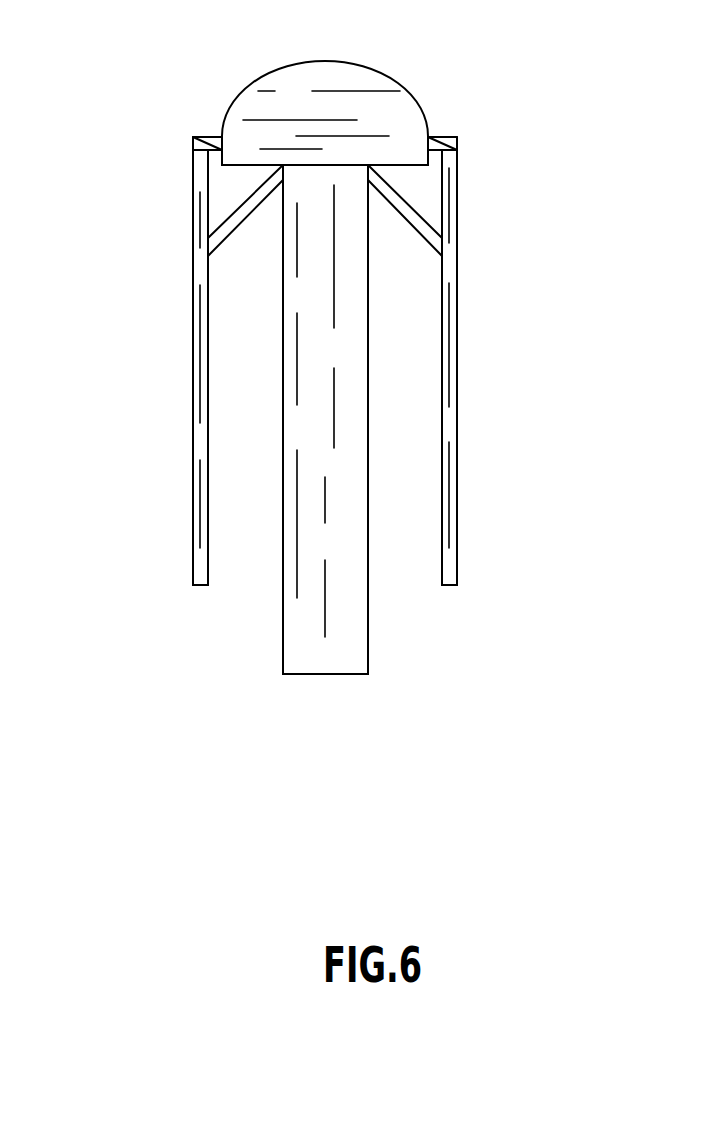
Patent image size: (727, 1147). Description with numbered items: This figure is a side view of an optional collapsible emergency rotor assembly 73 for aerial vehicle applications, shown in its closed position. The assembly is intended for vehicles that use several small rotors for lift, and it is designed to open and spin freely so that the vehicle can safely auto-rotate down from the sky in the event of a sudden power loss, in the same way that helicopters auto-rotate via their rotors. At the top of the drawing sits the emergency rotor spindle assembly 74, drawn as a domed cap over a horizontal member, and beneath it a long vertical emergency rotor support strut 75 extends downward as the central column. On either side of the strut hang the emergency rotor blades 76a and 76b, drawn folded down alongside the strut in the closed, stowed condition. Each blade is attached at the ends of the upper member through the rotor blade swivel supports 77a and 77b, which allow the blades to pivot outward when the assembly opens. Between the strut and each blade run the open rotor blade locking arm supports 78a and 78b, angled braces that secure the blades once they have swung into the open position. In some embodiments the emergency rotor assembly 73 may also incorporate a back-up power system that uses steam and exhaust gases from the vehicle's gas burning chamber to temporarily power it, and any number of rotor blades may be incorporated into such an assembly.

The emergency rotor assembly 73 is at (263, 52).
The emergency rotor spindle assembly 74 is at (365, 75).
The emergency rotor support strut 75 is at (320, 675).
The emergency rotor blade 76a is at (188, 423).
The emergency rotor blade 76b is at (462, 560).
The rotor blade swivel support 77a is at (200, 130).
The rotor blade swivel support 77b is at (443, 128).
The open rotor blade locking arm support 78a is at (243, 193).
The open rotor blade locking arm support 78b is at (397, 217).